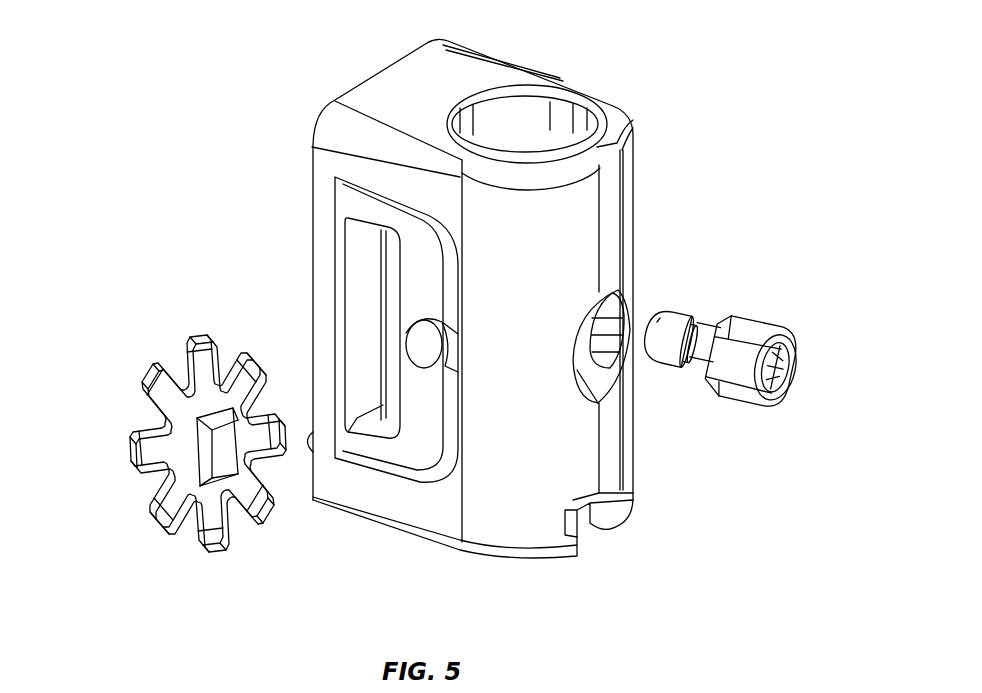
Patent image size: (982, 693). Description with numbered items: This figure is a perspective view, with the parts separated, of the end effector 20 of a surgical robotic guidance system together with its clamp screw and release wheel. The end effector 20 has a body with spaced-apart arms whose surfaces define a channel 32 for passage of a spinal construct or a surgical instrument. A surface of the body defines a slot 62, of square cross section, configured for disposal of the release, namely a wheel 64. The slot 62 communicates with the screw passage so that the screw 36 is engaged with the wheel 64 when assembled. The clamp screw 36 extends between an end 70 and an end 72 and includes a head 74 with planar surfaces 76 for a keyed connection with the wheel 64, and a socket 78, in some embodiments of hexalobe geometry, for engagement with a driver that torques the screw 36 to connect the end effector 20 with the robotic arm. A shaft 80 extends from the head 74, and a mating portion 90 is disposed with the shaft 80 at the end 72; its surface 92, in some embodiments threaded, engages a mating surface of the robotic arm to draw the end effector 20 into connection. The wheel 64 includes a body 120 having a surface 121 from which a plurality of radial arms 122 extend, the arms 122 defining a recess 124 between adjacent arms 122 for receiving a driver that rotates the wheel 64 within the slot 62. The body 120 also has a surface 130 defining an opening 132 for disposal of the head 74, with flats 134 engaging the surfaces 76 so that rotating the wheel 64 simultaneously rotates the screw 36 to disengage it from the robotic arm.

The end effector 20 is at (300, 68).
The channel 32 is at (530, 130).
The slot 62 is at (362, 282).
The wheel 64 is at (180, 468).
The recess 124 is at (180, 440).
The body 120 is at (188, 375).
The surface 121 is at (193, 342).
The arms 122 is at (163, 392).
The surface 130 is at (216, 464).
The opening 132 is at (224, 452).
The flats 134 is at (238, 520).
The clamp screw 36 is at (747, 319).
The mating portion 90 is at (668, 338).
The surface 92 is at (690, 343).
The end 72 is at (657, 322).
The shaft 80 is at (705, 342).
The end 70 is at (752, 361).
The planar surfaces 76 is at (744, 360).
The head 74 is at (775, 367).
The socket 78 is at (775, 367).